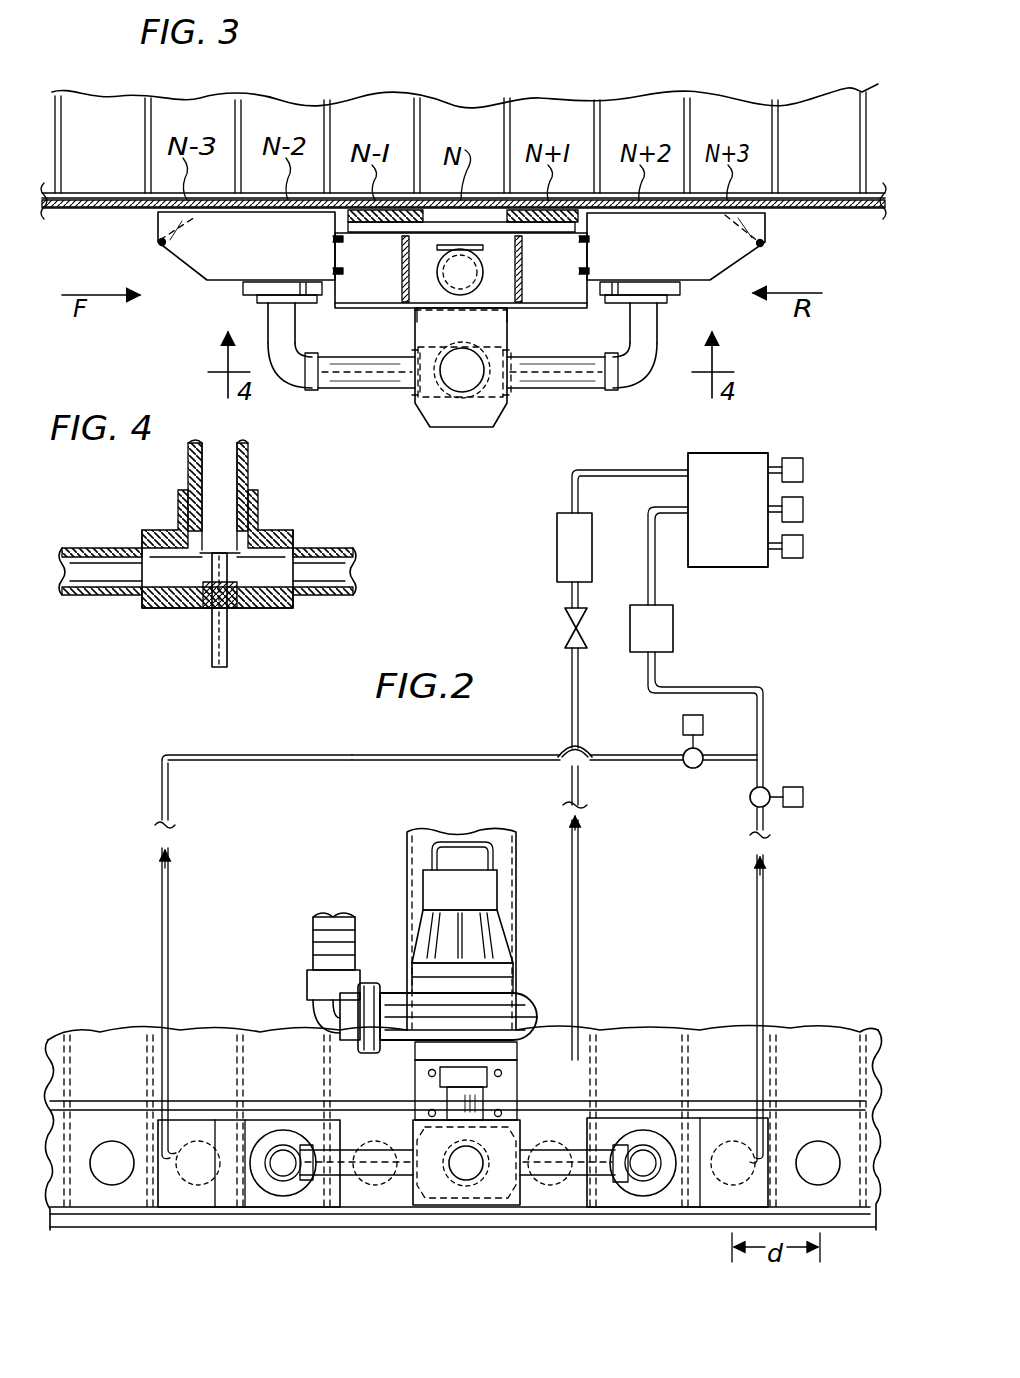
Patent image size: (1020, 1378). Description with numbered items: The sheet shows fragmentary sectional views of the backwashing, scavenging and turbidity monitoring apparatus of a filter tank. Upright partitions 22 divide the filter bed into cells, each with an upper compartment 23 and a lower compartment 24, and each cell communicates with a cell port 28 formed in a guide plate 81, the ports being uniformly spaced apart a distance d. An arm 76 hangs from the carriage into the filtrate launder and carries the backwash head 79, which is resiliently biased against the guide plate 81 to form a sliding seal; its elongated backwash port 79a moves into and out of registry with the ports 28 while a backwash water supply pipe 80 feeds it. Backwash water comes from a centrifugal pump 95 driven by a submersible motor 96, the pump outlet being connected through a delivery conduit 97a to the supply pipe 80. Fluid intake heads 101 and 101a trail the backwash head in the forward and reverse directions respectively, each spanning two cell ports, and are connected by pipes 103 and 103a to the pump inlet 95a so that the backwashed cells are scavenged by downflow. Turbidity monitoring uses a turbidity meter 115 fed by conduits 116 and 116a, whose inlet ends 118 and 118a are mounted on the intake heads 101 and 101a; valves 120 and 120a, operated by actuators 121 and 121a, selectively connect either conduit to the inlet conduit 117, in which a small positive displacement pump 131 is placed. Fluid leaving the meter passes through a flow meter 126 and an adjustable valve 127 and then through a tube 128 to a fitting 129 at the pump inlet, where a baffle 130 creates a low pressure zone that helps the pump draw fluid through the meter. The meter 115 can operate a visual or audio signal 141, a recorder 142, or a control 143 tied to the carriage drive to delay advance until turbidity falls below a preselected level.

In FIG. 3, the partitions 22 is at (152, 125).
In FIG. 2, the partitions 22 is at (73, 1067).
In FIG. 3, the upper compartment 23 is at (112, 112).
In FIG. 2, the upper compartment 23 is at (102, 1073).
In FIG. 2, the lower compartment 24 is at (85, 1190).
In FIG. 3, the cell ports 28 is at (90, 210).
In FIG. 2, the cell ports 28 is at (117, 1187).
In FIG. 2, the arm 76 is at (423, 842).
In FIG. 3, the backwash head 79 is at (505, 222).
In FIG. 3, the backwash port 79a is at (393, 230).
In FIG. 3, the backwash water supply pipe 80 is at (483, 280).
In FIG. 4, the backwash water supply pipe 80 is at (240, 473).
In FIG. 3, the guide plate 81 is at (142, 212).
In FIG. 2, the guide plate 81 is at (792, 1133).
In FIG. 2, the pump 95 is at (503, 1015).
In FIG. 3, the inlet 95a is at (460, 395).
In FIG. 2, the inlet 95a is at (487, 1103).
In FIG. 2, the motor 96 is at (487, 937).
In FIG. 2, the delivery conduit 97a is at (312, 920).
In FIG. 3, the fluid intake head 101 is at (217, 257).
In FIG. 2, the fluid intake head 101 is at (253, 1200).
In FIG. 3, the second fluid intake head 101a is at (708, 260).
In FIG. 2, the second fluid intake head 101a is at (675, 1197).
In FIG. 3, the pipe 103 is at (382, 375).
In FIG. 4, the pipe 103 is at (103, 547).
In FIG. 2, the pipe 103 is at (350, 1167).
In FIG. 3, the pipe 103a is at (555, 382).
In FIG. 4, the pipe 103a is at (323, 543).
In FIG. 2, the pipe 103a is at (532, 1173).
In FIG. 2, the turbidity meter 115 is at (718, 462).
In FIG. 3, the monitor inlet conduit 116 is at (160, 246).
In FIG. 2, the monitor inlet conduit 116 is at (352, 755).
In FIG. 3, the second inlet conduit 116a is at (762, 248).
In FIG. 2, the second inlet conduit 116a is at (762, 887).
In FIG. 2, the monitor inlet conduit 117 is at (710, 695).
In FIG. 3, the inlet end 118 is at (192, 237).
In FIG. 2, the inlet end 118 is at (167, 1203).
In FIG. 3, the inlet end 118a is at (768, 226).
In FIG. 2, the valve 120 is at (696, 768).
In FIG. 2, the valve 120a is at (768, 790).
In FIG. 2, the actuator 121 is at (683, 740).
In FIG. 2, the actuator 121a is at (792, 807).
In FIG. 2, the flow meter 126 is at (557, 545).
In FIG. 2, the adjustable valve 127 is at (565, 625).
In FIG. 4, the tube 128 is at (227, 650).
In FIG. 2, the tube 128 is at (578, 890).
In FIG. 4, the fitting 129 is at (208, 607).
In FIG. 4, the baffle 130 is at (253, 532).
In FIG. 2, the positive displacement pump 131 is at (667, 640).
In FIG. 2, the visual or audio signal 141 is at (795, 470).
In FIG. 2, the recorder 142 is at (795, 512).
In FIG. 2, the control 143 is at (795, 548).